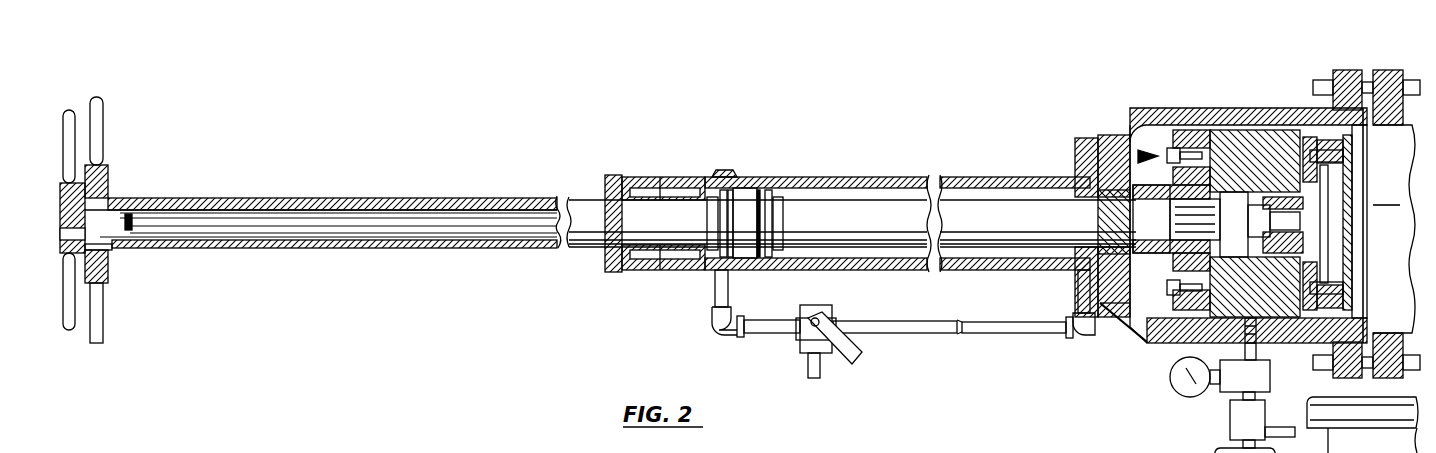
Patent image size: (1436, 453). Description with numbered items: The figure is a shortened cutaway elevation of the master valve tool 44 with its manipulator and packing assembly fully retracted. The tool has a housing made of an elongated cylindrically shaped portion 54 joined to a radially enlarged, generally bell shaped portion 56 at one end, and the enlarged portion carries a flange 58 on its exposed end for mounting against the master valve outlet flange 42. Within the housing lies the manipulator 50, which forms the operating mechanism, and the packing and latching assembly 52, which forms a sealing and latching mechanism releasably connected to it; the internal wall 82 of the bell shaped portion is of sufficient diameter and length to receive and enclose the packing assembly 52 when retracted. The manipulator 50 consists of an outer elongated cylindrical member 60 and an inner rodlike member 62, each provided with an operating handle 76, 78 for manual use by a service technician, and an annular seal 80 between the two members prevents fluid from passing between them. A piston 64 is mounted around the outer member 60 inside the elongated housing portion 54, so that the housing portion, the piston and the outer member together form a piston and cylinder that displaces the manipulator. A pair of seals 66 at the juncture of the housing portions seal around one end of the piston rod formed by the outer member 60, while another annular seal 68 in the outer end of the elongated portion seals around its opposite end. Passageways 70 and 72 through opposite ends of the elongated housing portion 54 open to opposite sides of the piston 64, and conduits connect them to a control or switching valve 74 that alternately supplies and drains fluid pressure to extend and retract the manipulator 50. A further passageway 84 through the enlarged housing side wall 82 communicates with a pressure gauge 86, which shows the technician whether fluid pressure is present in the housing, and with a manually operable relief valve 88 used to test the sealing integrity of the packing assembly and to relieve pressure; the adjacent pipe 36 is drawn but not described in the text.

The inlet pipe 36 is at (1219, 446).
The master valve outlet flange 42 is at (1387, 75).
The master valve tool 44 is at (840, 124).
The manipulator 50 is at (432, 178).
The packing and latching assembly 52 is at (1118, 140).
The elongated cylindrically shaped housing portion 54 is at (875, 177).
The radially enlarged housing portion 56 is at (1178, 108).
The flange 58 is at (1348, 95).
The outer elongated cylindrical member 60 is at (258, 197).
The inner rodlike member 62 is at (312, 226).
The piston 64 is at (748, 177).
The seals 66 is at (1085, 178).
The annular seal 68 is at (665, 272).
The passageway 70 is at (716, 272).
The passageway 72 is at (1082, 264).
The control or switching valve 74 is at (848, 363).
The operating handle 76 is at (96, 100).
The operating handle 78 is at (68, 110).
The annular seal 80 is at (128, 213).
The internal wall 82 is at (1104, 338).
The passageway 84 is at (1245, 322).
The pressure gauge 86 is at (1180, 388).
The manually operable relief valve 88 is at (1230, 418).